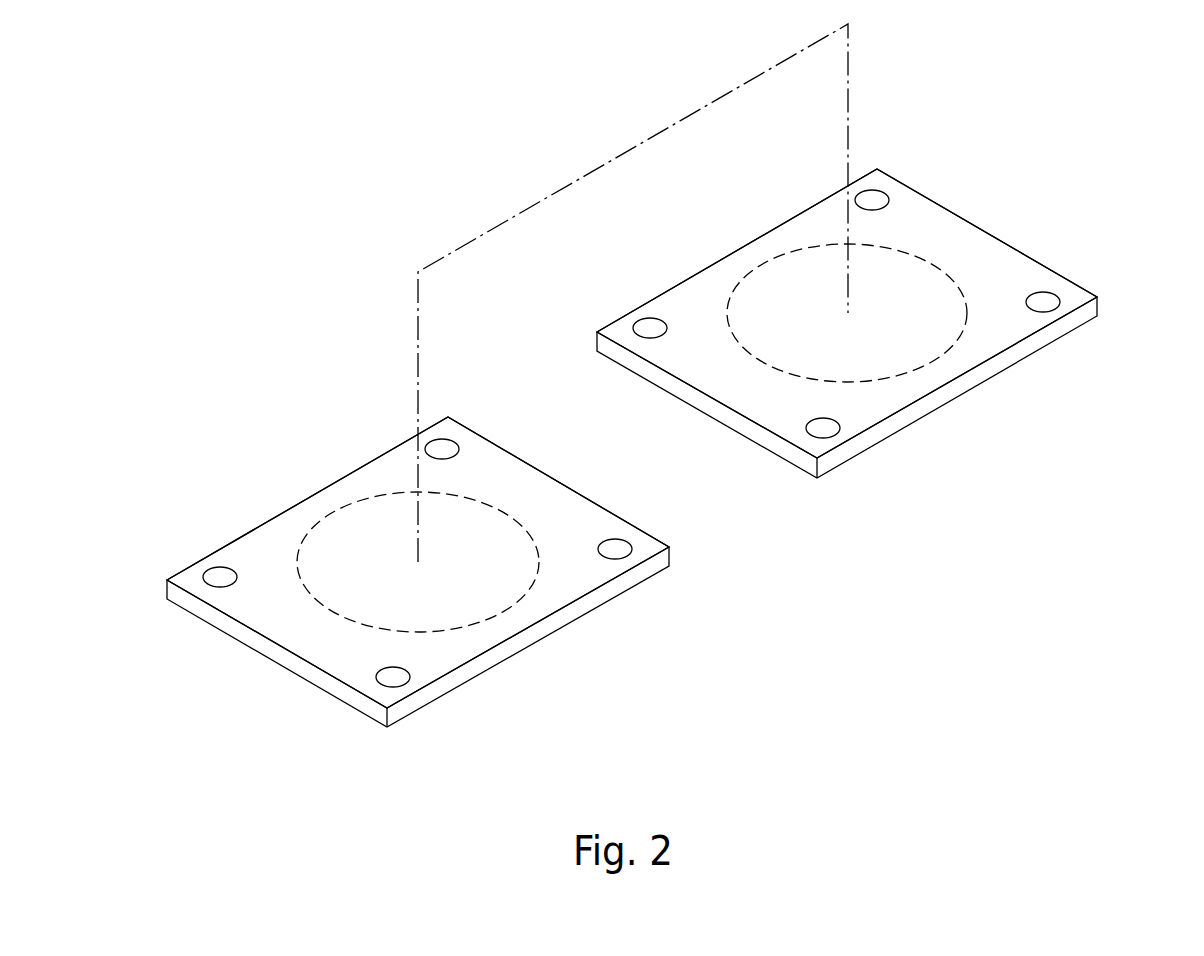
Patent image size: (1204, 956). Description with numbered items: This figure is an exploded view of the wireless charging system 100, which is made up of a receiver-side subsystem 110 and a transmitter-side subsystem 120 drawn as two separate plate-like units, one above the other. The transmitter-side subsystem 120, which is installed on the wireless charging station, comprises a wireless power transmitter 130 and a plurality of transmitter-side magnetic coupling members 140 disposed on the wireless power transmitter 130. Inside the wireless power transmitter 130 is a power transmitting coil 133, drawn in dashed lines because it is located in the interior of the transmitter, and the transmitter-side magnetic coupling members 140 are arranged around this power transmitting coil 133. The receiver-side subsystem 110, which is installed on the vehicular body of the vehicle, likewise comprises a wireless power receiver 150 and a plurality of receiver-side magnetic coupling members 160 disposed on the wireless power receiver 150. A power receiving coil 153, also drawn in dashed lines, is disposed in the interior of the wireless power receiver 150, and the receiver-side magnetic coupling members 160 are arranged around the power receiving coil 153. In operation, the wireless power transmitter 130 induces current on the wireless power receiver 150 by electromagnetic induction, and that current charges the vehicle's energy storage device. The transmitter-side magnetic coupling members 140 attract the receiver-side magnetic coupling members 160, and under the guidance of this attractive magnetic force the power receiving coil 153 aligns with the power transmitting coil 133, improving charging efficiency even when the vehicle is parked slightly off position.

The wireless charging system 100 is at (223, 101).
The receiver-side subsystem 110 is at (254, 670).
The transmitter-side subsystem 120 is at (992, 212).
The wireless power transmitter 130 is at (890, 402).
The power transmitting coil 133 is at (966, 334).
The transmitter-side magnetic coupling members 140 is at (1050, 302).
The wireless power receiver 150 is at (460, 650).
The power receiving coil 153 is at (537, 582).
The receiver-side magnetic coupling members 160 is at (622, 552).